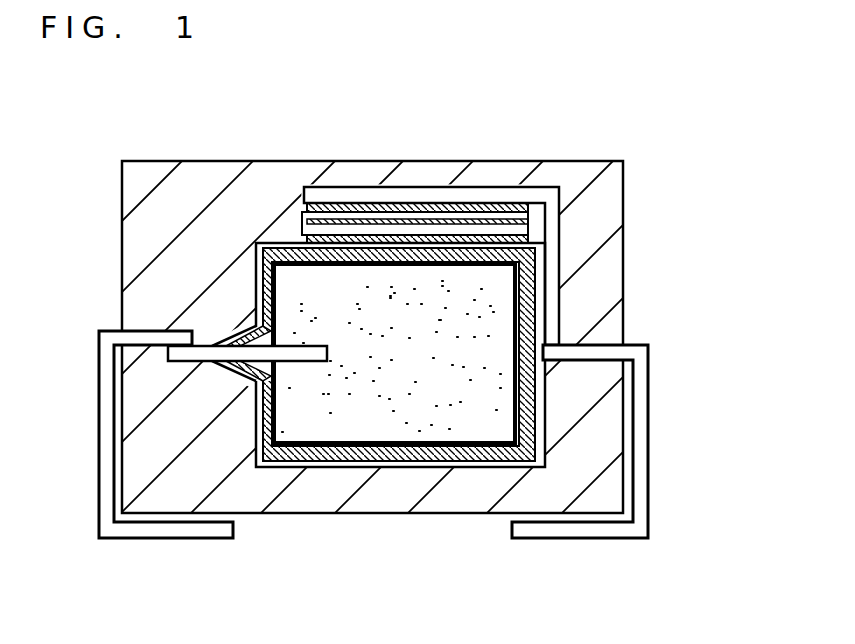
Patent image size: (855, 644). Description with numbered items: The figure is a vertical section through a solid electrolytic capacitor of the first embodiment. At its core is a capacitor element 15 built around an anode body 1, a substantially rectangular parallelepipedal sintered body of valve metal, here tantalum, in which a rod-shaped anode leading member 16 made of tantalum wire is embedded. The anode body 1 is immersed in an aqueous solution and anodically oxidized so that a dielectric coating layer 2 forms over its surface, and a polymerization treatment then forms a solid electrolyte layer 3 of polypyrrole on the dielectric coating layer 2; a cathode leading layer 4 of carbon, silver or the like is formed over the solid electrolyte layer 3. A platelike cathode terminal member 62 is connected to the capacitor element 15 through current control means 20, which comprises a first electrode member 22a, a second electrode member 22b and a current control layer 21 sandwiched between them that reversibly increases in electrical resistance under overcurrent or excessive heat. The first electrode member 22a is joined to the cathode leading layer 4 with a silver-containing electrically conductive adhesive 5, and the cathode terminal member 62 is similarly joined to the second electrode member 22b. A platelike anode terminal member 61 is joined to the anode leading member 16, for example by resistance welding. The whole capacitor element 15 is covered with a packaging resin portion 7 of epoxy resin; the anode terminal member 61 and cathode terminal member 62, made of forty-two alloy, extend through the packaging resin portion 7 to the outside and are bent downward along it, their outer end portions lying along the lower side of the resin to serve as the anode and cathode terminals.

The anode body 1 is at (310, 427).
The dielectric coating layer 2 is at (335, 447).
The solid electrolyte layer 3 is at (378, 455).
The cathode leading layer 4 is at (418, 467).
The electrically conductive adhesive 5 is at (303, 237).
The packaging resin portion 7 is at (163, 203).
The capacitor element 15 is at (400, 442).
The anode leading member 16 is at (200, 345).
The current control means 20 is at (533, 247).
The current control layer 21 is at (528, 218).
The first electrode member 22a is at (528, 231).
The second electrode member 22b is at (528, 212).
The anode terminal member 61 is at (107, 456).
The cathode terminal member 62 is at (642, 440).